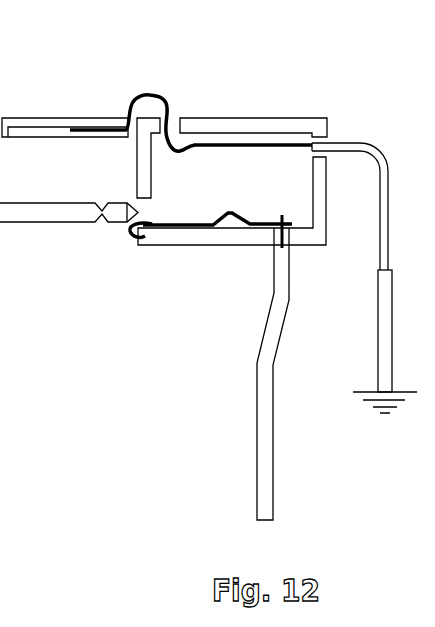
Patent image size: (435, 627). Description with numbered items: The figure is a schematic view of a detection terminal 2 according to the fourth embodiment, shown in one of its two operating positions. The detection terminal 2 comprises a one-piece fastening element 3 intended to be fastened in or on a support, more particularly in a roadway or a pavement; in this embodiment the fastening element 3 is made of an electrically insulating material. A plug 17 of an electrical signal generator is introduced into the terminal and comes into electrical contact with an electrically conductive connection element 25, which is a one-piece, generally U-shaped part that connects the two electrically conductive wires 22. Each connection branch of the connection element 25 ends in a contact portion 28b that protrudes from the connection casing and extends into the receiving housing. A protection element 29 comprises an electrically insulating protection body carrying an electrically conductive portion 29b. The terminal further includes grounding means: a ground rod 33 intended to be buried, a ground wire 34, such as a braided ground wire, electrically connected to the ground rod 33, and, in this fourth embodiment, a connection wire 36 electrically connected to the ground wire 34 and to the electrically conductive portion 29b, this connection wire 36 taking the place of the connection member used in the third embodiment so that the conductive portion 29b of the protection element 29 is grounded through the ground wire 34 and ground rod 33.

The detection terminal 2 is at (209, 274).
The fastening element 3 is at (223, 118).
The plug 17 is at (50, 210).
The electrically conductive wire 22 is at (270, 423).
The connection element 25 is at (188, 224).
The contact portion 28b is at (132, 230).
The protection element 29 is at (62, 122).
The electrically conductive portion 29b is at (37, 130).
The ground rod 33 is at (382, 317).
The ground wire 34 is at (387, 188).
The connection wire 36 is at (260, 144).